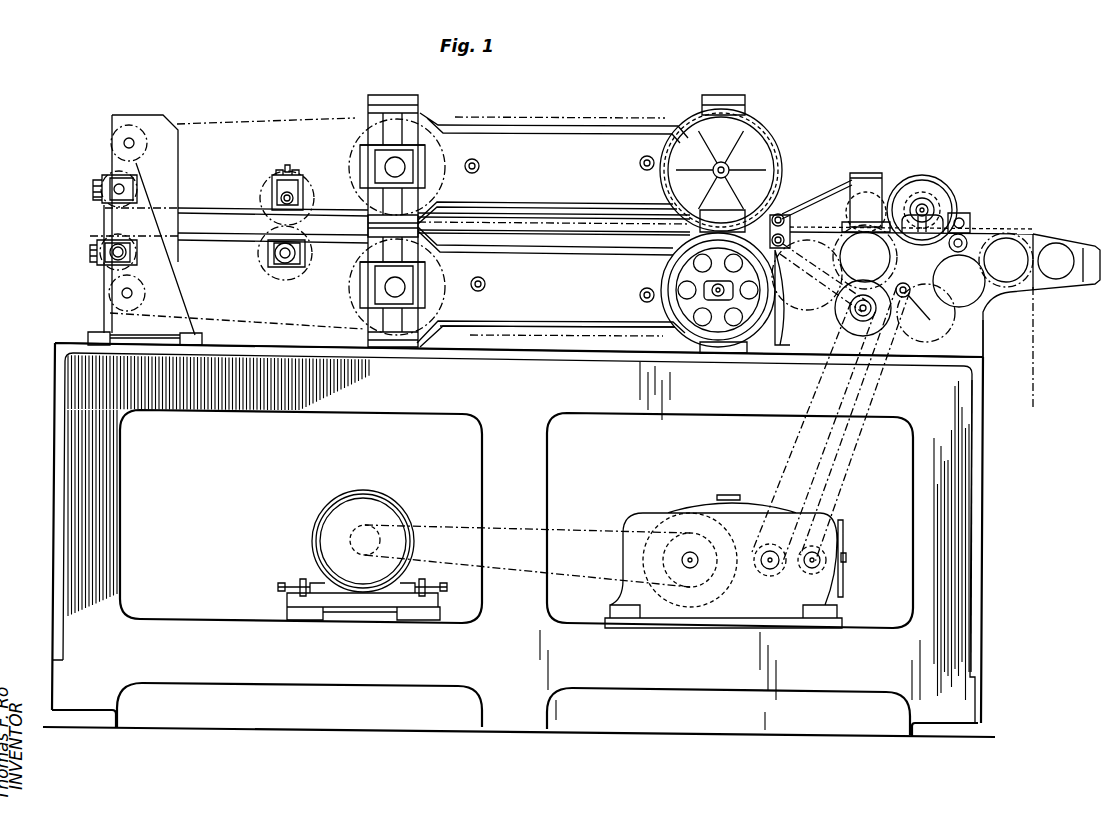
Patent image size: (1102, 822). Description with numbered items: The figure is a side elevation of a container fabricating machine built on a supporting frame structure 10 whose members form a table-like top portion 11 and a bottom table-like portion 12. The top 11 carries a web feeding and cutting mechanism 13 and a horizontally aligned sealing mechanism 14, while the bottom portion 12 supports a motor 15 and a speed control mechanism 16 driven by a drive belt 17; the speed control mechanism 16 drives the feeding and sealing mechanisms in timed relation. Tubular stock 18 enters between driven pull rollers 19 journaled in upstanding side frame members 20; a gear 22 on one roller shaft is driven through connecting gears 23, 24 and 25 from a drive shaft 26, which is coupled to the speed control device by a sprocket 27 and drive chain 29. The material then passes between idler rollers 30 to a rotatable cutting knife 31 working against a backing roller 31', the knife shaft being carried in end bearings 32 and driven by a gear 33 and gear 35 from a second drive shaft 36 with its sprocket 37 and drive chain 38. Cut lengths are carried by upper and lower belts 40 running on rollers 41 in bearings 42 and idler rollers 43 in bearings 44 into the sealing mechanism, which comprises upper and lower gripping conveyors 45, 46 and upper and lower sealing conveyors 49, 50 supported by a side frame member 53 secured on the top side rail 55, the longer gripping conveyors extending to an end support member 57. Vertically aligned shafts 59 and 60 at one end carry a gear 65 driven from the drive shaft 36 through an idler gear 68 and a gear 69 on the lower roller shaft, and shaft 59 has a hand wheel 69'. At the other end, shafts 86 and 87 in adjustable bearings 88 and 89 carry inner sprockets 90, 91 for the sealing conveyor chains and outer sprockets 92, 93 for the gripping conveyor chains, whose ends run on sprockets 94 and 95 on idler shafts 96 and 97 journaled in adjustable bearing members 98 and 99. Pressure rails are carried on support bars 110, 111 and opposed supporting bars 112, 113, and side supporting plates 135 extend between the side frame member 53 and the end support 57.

The supporting frame structure 10 is at (68, 389).
The top portion 11 is at (58, 342).
The bottom table-like portion 12 is at (200, 620).
The web feeding and cutting mechanism 13 is at (993, 203).
The sealing mechanism 14 is at (558, 102).
The motor 15 is at (373, 494).
The speed control mechanism 16 is at (642, 514).
The drive belt 17 is at (596, 531).
The tubular stock 18 is at (1040, 347).
The pull rollers 19 is at (1060, 244).
The side frame members 20 is at (970, 362).
The gear 22 is at (972, 305).
The connecting gear 23 is at (950, 336).
The connecting gear 24 is at (977, 348).
The connecting gear 25 is at (925, 312).
The drive shaft 26 is at (903, 297).
The sprocket 27 is at (967, 262).
The drive chain 29 is at (862, 463).
The idler rollers 30 is at (990, 237).
The rotatable cutting knife 31 is at (856, 220).
The backing roller 31' is at (936, 192).
The end bearings 32 is at (922, 176).
The gear 33 is at (945, 180).
The gear 35 is at (852, 338).
The drive shaft 36 is at (896, 300).
The sprocket 37 is at (803, 350).
The drive chain 38 is at (776, 465).
The upper and lower belts 40 is at (827, 190).
The rollers 41 is at (858, 190).
The bearings 42 is at (866, 172).
The idler rollers 43 is at (791, 236).
The bearings 44 is at (782, 214).
The upper gripping conveyor 45 is at (244, 122).
The lower gripping conveyor 46 is at (218, 320).
The upper sealing conveyor 49 is at (614, 119).
The lower sealing conveyor 50 is at (583, 248).
The side frame member 53 is at (545, 322).
The top side rail 55 is at (466, 357).
The side support member 57 is at (133, 100).
The upper transverse shaft 59 is at (724, 167).
The lower transverse shaft 60 is at (717, 296).
The gear 65 is at (753, 345).
The idler gear 68 is at (787, 297).
The gear 69 is at (865, 257).
The hand wheel 69' is at (739, 170).
The transverse shaft 86 is at (400, 162).
The transverse shaft 87 is at (400, 290).
The adjustable bearing 88 is at (375, 160).
The adjustable bearing 89 is at (375, 275).
The inner sprockets 90 is at (362, 128).
The inner sprockets 91 is at (360, 247).
The outer sprockets 92 is at (423, 143).
The outer sprockets 93 is at (427, 280).
The upper sprockets 94 is at (110, 137).
The lower sprockets 95 is at (108, 288).
The idler shafts 96 is at (131, 146).
The idler shafts 97 is at (129, 291).
The bearing member 98 is at (100, 202).
The bearing member 99 is at (94, 250).
The support bar 110 is at (480, 166).
The support bar 111 is at (639, 163).
The supporting bar 112 is at (486, 284).
The supporting bar 113 is at (639, 296).
The side supporting plate 135 is at (213, 210).